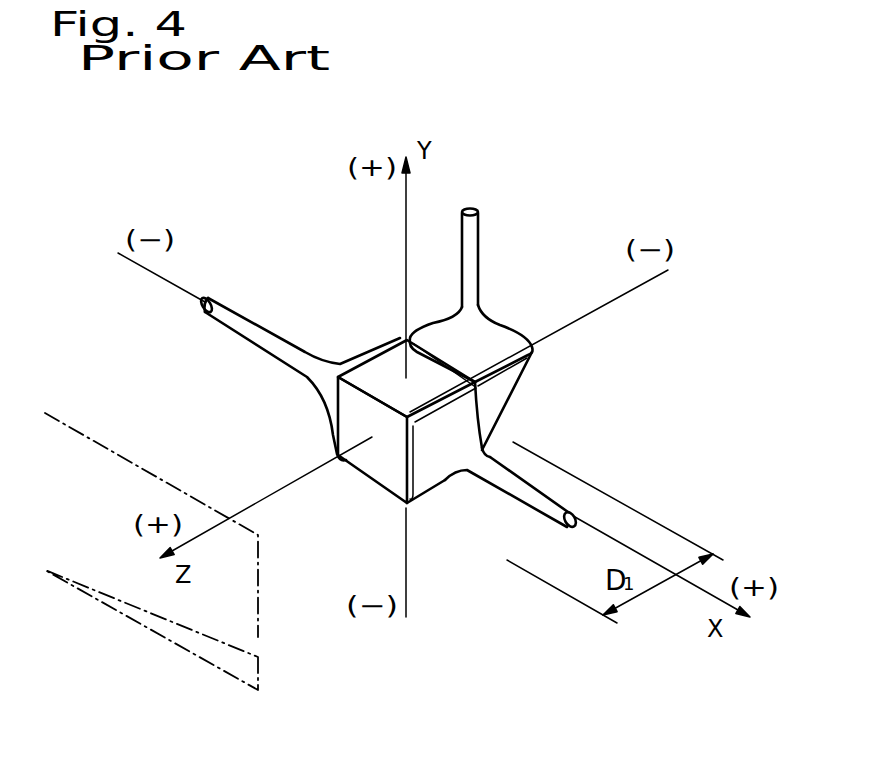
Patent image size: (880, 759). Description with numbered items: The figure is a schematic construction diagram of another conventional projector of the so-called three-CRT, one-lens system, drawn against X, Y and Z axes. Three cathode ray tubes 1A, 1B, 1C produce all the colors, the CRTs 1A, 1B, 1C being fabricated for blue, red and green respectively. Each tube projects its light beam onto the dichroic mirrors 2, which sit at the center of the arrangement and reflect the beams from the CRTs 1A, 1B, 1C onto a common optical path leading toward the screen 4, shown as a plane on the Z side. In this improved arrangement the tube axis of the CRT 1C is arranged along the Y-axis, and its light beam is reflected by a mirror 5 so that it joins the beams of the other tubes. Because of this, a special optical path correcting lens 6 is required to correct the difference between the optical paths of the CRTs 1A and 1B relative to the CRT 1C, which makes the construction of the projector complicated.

The CRT 1A is at (438, 472).
The CRT 1B is at (253, 332).
The CRT 1C is at (502, 333).
The dichroic mirrors 2 is at (372, 470).
The screen 4 is at (258, 637).
The mirror 5 is at (502, 387).
The optical path correcting lens 6 is at (532, 355).